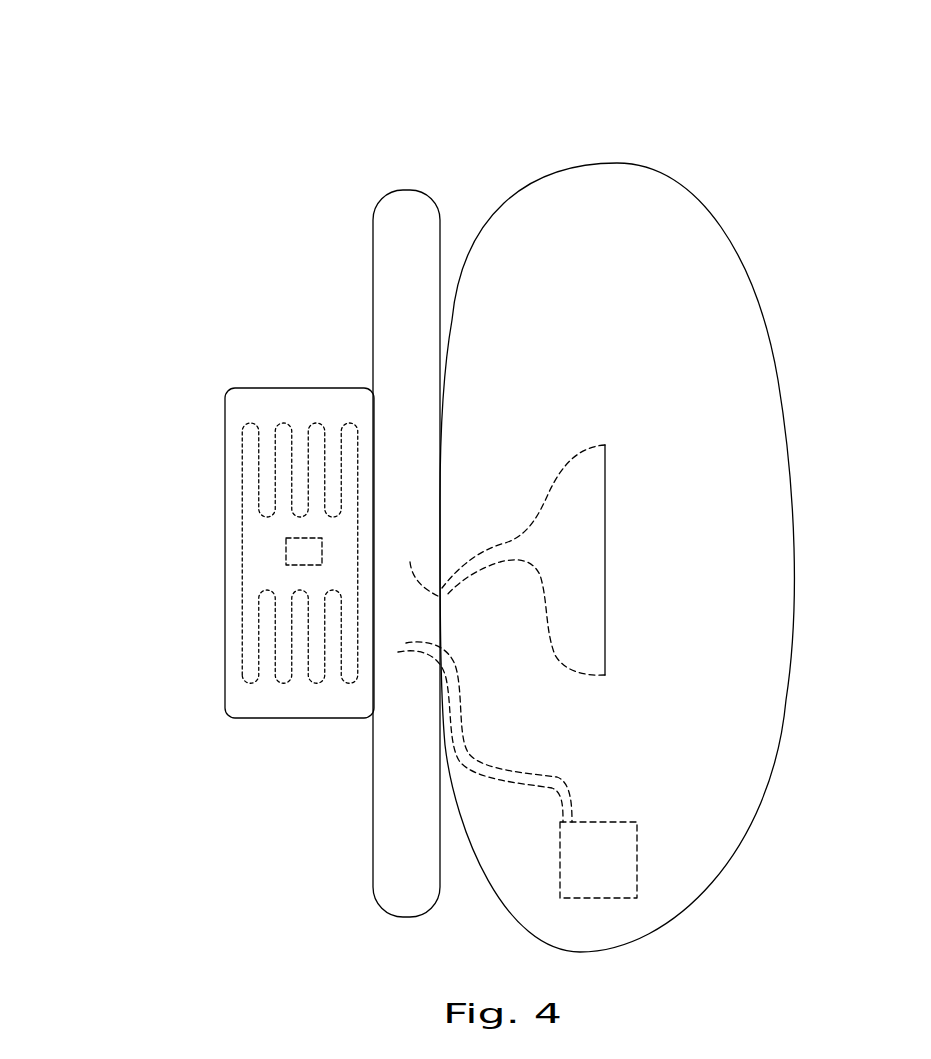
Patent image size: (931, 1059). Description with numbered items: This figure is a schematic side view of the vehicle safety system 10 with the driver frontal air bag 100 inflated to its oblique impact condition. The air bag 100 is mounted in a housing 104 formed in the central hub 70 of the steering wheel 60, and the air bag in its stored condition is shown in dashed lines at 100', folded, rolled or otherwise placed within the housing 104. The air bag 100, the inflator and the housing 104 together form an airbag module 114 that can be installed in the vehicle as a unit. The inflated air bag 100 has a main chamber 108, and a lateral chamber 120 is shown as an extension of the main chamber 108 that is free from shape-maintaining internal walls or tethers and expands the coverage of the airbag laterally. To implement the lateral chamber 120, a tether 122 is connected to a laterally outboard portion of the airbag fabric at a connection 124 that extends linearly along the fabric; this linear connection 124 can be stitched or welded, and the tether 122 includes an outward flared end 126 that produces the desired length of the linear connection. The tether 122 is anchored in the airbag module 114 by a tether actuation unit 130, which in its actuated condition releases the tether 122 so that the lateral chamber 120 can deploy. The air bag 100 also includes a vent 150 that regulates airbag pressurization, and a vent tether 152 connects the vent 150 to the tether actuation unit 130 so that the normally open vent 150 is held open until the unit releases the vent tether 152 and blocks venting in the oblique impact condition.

The vehicle safety system 10 is at (254, 138).
The steering wheel 60 is at (388, 835).
The central hub 70 is at (230, 623).
The driver frontal air bag 100 is at (614, 536).
The stored condition of the frontal air bag 100' is at (234, 553).
The housing 104 is at (273, 718).
The main chamber 108 is at (678, 257).
The airbag module 114 is at (158, 691).
The lateral chamber 120 is at (652, 522).
The tether 122 is at (455, 598).
The connection 124 is at (606, 566).
The outward flared end 126 is at (553, 483).
The tether actuation unit 130 is at (303, 555).
The vent 150 is at (622, 822).
The vent tether 152 is at (532, 778).